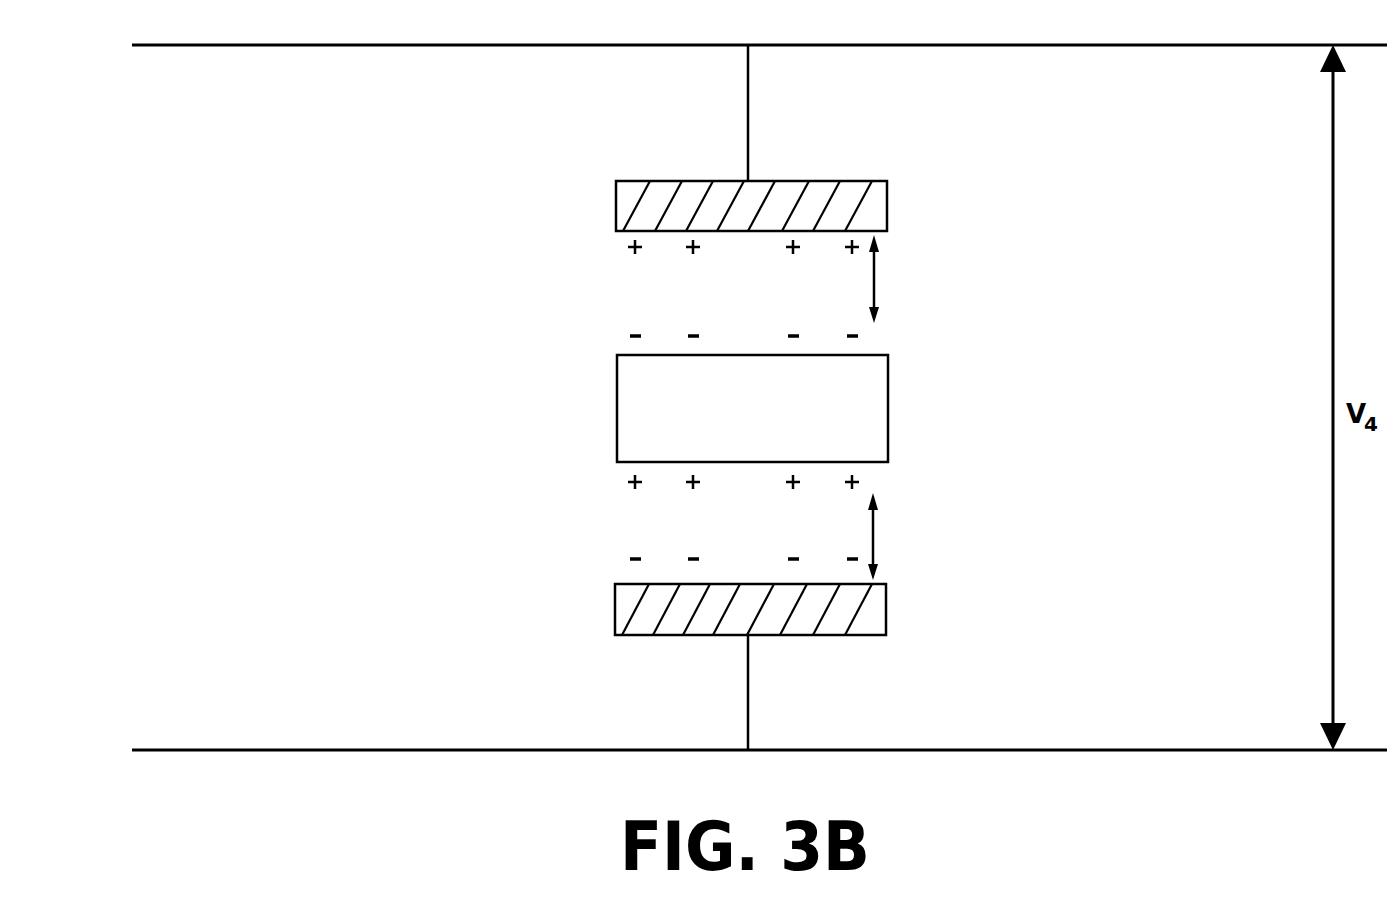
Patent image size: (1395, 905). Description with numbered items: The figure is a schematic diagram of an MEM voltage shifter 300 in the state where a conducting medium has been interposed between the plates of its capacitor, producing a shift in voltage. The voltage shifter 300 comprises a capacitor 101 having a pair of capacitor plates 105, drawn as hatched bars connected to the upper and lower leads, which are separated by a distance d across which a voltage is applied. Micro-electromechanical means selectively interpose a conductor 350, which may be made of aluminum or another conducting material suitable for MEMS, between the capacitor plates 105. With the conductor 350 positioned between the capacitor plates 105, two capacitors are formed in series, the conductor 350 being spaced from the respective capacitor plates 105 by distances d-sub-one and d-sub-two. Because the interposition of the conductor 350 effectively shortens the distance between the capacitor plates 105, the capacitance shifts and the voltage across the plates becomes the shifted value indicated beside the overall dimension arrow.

The capacitor 101 is at (786, 386).
The capacitor plates 105 is at (616, 205).
The conductor 350 is at (617, 403).
The MEM voltage shifter 300 is at (192, 796).